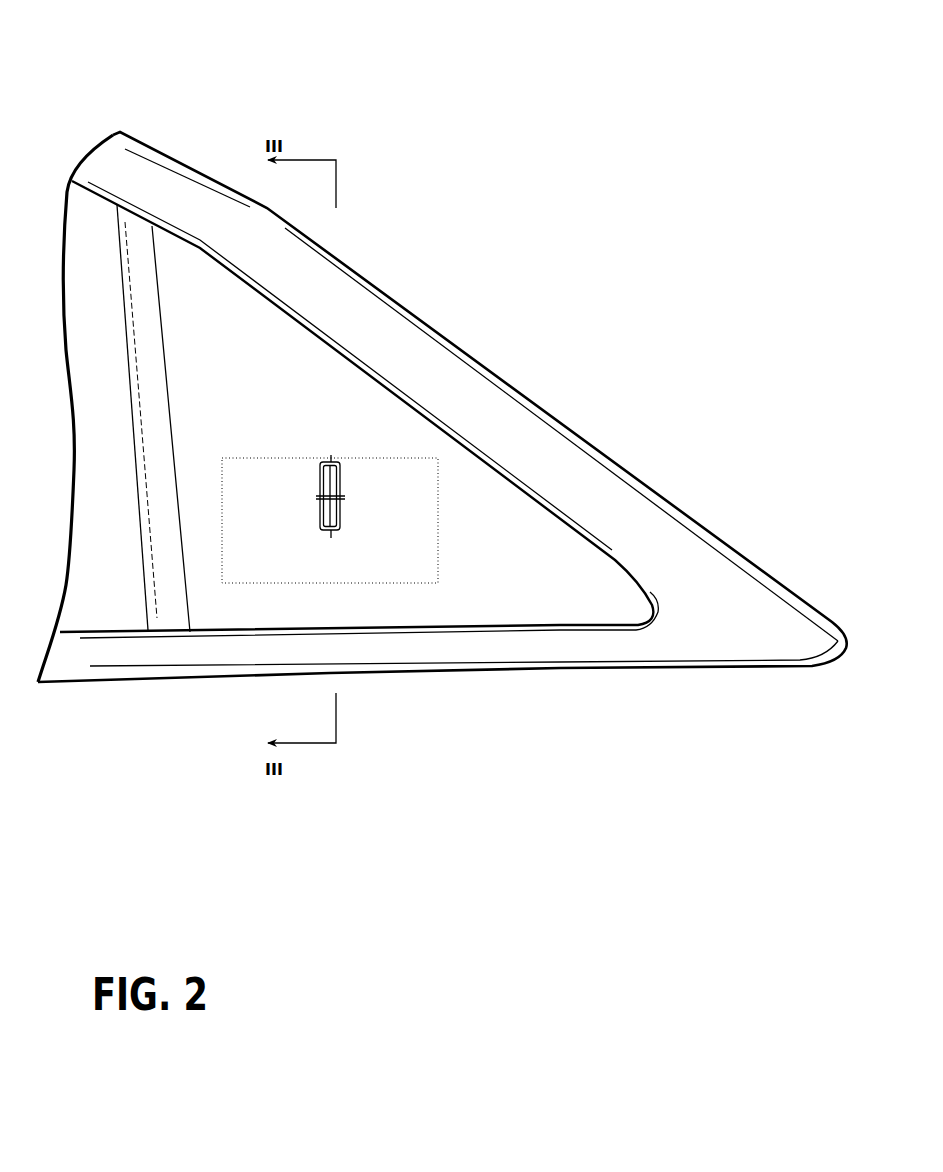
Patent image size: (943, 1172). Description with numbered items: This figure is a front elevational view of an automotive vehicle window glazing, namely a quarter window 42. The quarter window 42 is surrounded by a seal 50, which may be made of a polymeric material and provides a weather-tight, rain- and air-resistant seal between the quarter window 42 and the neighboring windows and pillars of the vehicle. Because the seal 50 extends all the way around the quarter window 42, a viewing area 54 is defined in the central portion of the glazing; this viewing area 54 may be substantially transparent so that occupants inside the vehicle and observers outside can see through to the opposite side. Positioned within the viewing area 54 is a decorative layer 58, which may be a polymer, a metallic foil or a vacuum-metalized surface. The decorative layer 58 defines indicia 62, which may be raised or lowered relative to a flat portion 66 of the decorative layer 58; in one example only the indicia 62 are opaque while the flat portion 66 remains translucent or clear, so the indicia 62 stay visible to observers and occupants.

The quarter window 42 is at (236, 110).
The seal 50 is at (197, 208).
The viewing area 54 is at (287, 368).
The decorative layer 58 is at (400, 457).
The indicia 62 is at (323, 484).
The flat portion 66 is at (258, 510).